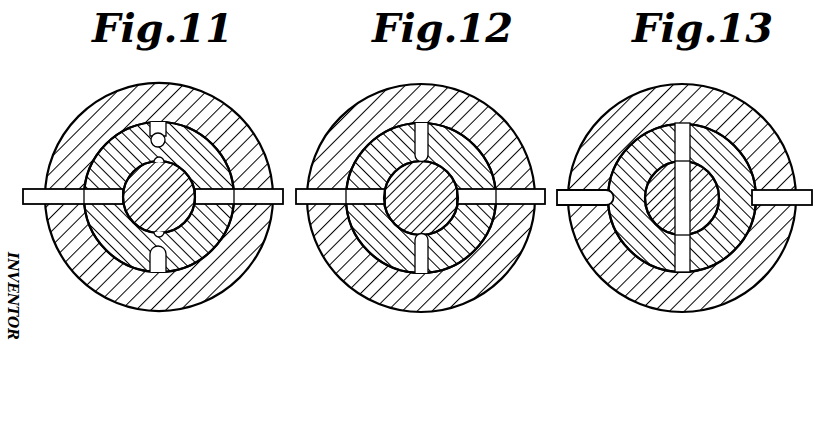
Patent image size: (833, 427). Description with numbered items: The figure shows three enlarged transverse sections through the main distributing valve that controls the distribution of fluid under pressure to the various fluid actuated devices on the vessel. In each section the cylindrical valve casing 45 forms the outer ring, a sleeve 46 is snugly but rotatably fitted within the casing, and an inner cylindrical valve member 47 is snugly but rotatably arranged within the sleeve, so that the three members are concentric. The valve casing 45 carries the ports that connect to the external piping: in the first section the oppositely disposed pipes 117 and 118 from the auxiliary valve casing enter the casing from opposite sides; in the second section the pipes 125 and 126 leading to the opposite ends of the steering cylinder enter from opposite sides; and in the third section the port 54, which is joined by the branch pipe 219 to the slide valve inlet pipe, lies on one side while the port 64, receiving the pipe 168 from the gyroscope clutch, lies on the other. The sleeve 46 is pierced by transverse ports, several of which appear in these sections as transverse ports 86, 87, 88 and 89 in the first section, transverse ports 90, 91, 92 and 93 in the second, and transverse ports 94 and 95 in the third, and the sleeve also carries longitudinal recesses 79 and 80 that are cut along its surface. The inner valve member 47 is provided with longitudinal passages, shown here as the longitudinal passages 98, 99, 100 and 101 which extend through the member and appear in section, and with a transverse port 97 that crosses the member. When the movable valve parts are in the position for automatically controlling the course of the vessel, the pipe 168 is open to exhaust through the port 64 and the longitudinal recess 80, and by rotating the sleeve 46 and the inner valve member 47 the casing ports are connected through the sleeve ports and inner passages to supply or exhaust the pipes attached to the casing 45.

In FIG. 11, the valve casing 45 is at (134, 96).
In FIG. 12, the valve casing 45 is at (425, 97).
In FIG. 13, the valve casing 45 is at (678, 98).
In FIG. 11, the sleeve 46 is at (208, 130).
In FIG. 12, the sleeve 46 is at (367, 253).
In FIG. 13, the sleeve 46 is at (725, 160).
In FIG. 11, the inner cylindrical valve member 47 is at (103, 150).
In FIG. 12, the inner cylindrical valve member 47 is at (466, 152).
In FIG. 13, the inner cylindrical valve member 47 is at (712, 243).
In FIG. 11, the pipe 117 is at (34, 189).
In FIG. 11, the pipe 118 is at (281, 189).
In FIG. 12, the pipe 118 is at (297, 190).
In FIG. 13, the pipe 168 is at (807, 190).
In FIG. 11, the transverse port 89 is at (163, 133).
In FIG. 11, the transverse port 88 is at (160, 268).
In FIG. 11, the longitudinal passage 100 is at (157, 162).
In FIG. 12, the longitudinal passage 100 is at (393, 140).
In FIG. 11, the longitudinal passage 101 is at (200, 140).
In FIG. 12, the longitudinal passage 101 is at (510, 137).
In FIG. 11, the transverse port 87 is at (265, 162).
In FIG. 11, the transverse port 86 is at (52, 228).
In FIG. 11, the longitudinal passage 99 is at (83, 244).
In FIG. 12, the longitudinal passage 99 is at (357, 157).
In FIG. 11, the longitudinal passage 98 is at (125, 268).
In FIG. 12, the longitudinal passage 98 is at (400, 272).
In FIG. 12, the transverse port 93 is at (429, 136).
In FIG. 12, the transverse port 92 is at (421, 266).
In FIG. 12, the pipe 126 is at (538, 190).
In FIG. 12, the pipe 125 is at (305, 207).
In FIG. 12, the transverse port 90 is at (340, 236).
In FIG. 12, the transverse port 91 is at (490, 237).
In FIG. 13, the transverse port 94 is at (680, 272).
In FIG. 13, the transverse port 95 is at (692, 145).
In FIG. 13, the port 54 is at (579, 153).
In FIG. 13, the longitudinal recess 80 is at (786, 166).
In FIG. 13, the branch pipe 219 is at (569, 206).
In FIG. 13, the longitudinal recess 79 is at (580, 240).
In FIG. 13, the transverse port 97 is at (612, 283).
In FIG. 13, the port 64 is at (790, 236).